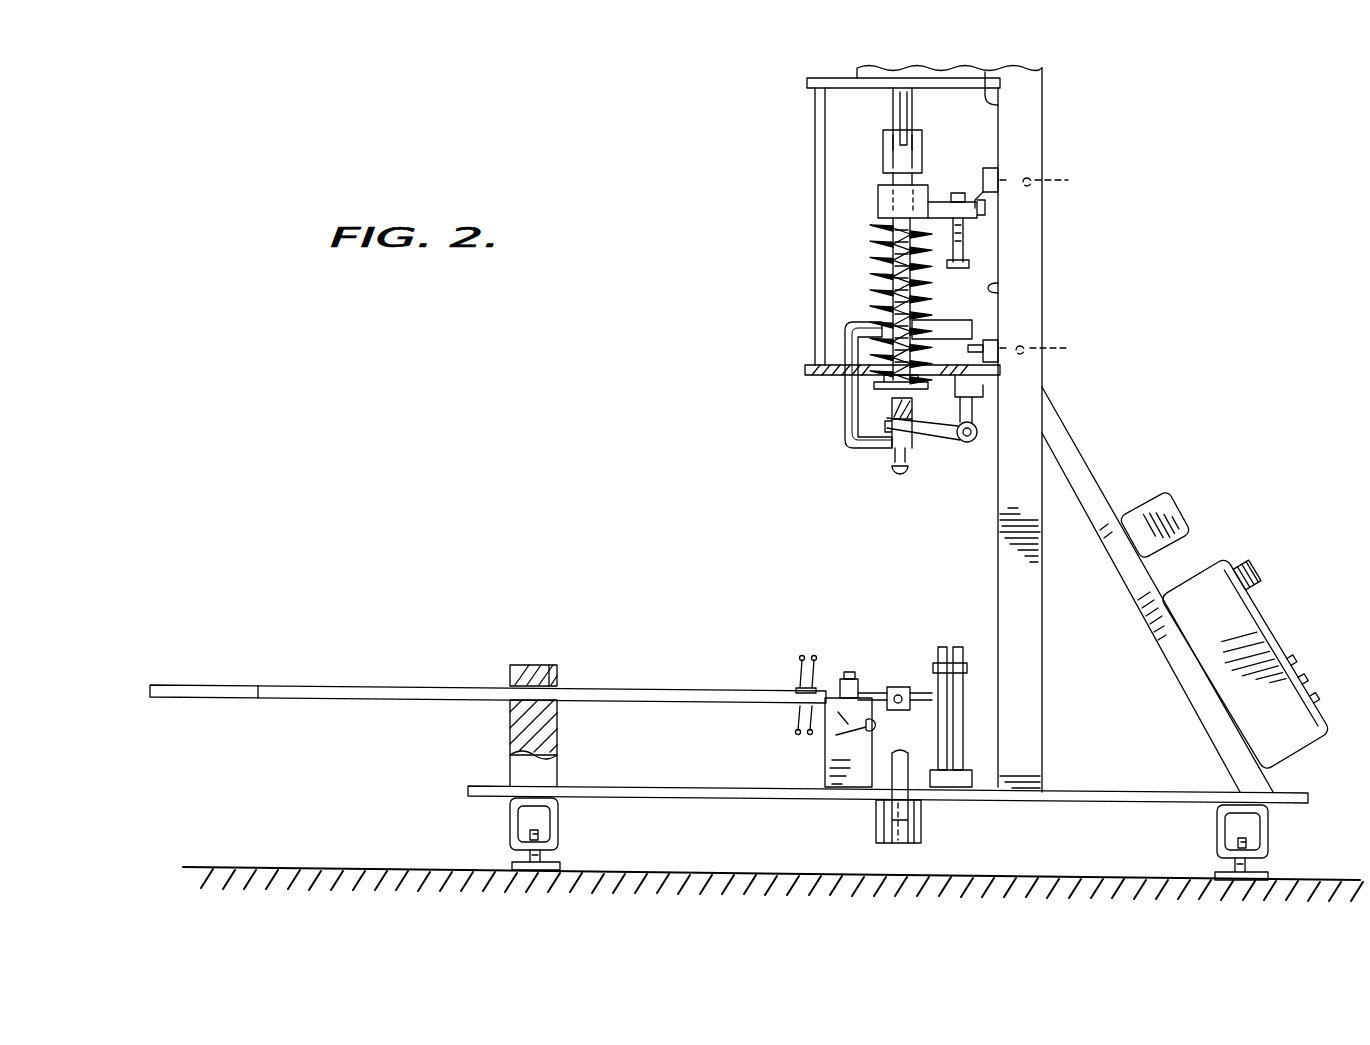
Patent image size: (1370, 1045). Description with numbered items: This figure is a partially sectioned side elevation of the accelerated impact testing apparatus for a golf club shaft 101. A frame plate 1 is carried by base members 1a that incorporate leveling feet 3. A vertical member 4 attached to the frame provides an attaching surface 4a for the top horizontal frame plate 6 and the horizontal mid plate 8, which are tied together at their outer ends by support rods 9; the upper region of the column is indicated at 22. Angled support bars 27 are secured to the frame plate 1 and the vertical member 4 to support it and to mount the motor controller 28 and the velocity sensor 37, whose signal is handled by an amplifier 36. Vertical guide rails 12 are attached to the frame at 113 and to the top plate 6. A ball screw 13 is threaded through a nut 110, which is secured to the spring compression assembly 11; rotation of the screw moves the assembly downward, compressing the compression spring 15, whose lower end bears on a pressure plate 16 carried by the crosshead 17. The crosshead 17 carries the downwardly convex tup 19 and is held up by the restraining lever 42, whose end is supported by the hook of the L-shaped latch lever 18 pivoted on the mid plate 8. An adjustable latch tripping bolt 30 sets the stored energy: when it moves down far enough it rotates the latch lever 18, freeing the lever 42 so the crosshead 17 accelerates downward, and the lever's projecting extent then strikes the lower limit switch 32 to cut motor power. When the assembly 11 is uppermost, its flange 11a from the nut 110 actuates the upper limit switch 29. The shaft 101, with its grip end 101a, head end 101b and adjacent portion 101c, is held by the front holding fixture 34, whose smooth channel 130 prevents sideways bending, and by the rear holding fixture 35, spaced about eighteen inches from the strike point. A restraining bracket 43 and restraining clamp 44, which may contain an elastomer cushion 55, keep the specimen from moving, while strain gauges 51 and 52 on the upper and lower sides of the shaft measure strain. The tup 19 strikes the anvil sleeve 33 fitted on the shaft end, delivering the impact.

The frame plate 1 is at (462, 796).
The base members 1a is at (560, 814).
The leveling feet 3 is at (555, 862).
The vertical member 4 is at (1020, 456).
The attaching surface 4a is at (1000, 290).
The top horizontal frame plate 6 is at (807, 86).
The horizontal frame mid plate 8 is at (805, 362).
The support rods 9 is at (815, 184).
The spring compression assembly 11 is at (870, 214).
The flange 11a is at (985, 208).
The guide rails 12 is at (912, 117).
The ball screw 13 is at (885, 298).
The compression spring 15 is at (870, 269).
The pressure plate 16 is at (880, 386).
The crosshead 17 is at (892, 402).
The latch lever 18 is at (847, 430).
The tup 19 is at (896, 474).
The column top 22 is at (1000, 103).
The angled support bars 27 is at (1162, 624).
The motor controller 28 is at (1243, 623).
The upper limit switch 29 is at (990, 168).
The latch tripping bolt 30 is at (965, 240).
The lower limit switch 32 is at (983, 343).
The anvil sleeve 33 is at (887, 699).
The front holding fixture 34 is at (830, 770).
The rear holding fixture 35 is at (510, 743).
The amplifier 36 is at (960, 670).
The velocity sensor 37 is at (1166, 508).
The restraining lever 42 is at (938, 440).
The restraining bracket 43 is at (840, 683).
The restraining clamp 44 is at (510, 667).
The strain gauge 51 is at (795, 690).
The strain gauge 52 is at (795, 712).
The elastomer cushion 55 is at (557, 733).
The golf club shaft 101 is at (660, 690).
The first end 101a is at (201, 685).
The second end 101b is at (925, 706).
The shaft end portion 101c is at (868, 697).
The nut 110 is at (878, 197).
The frame attachment 113 is at (882, 814).
The channel 130 is at (865, 728).